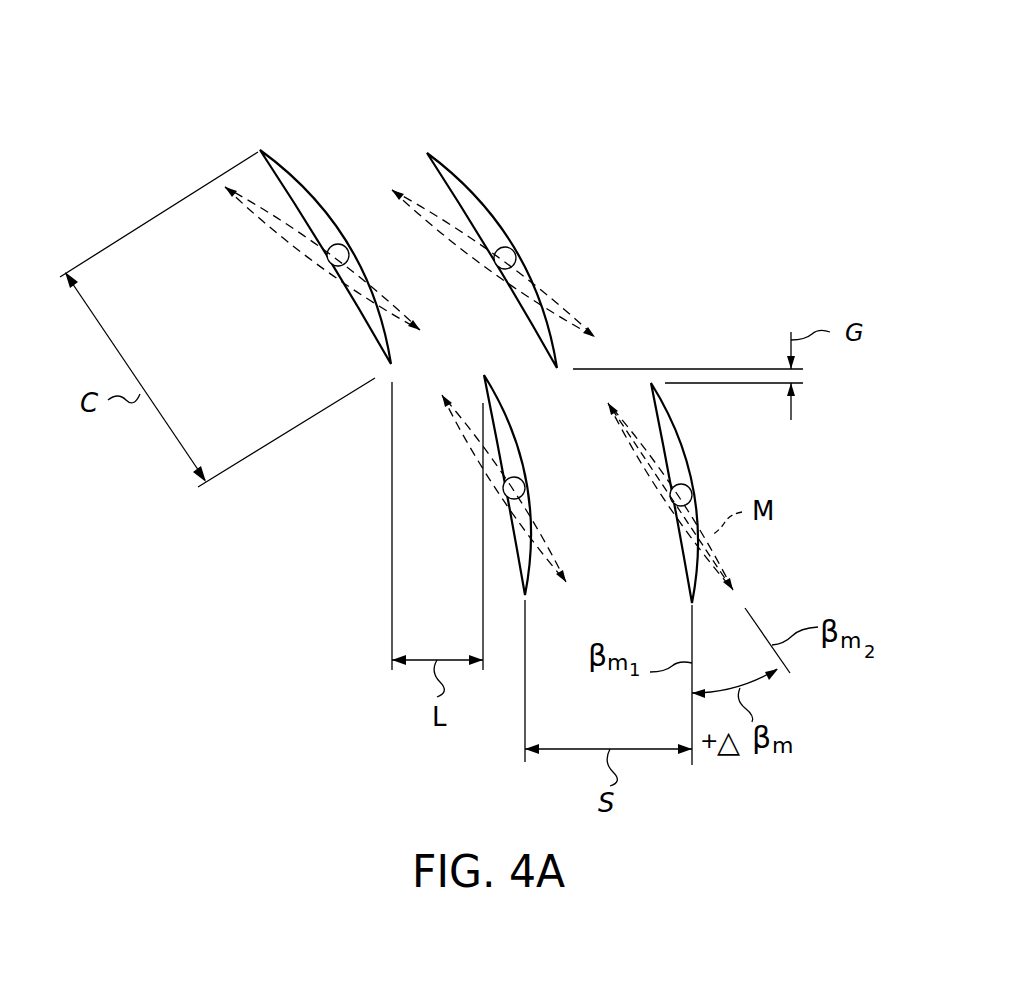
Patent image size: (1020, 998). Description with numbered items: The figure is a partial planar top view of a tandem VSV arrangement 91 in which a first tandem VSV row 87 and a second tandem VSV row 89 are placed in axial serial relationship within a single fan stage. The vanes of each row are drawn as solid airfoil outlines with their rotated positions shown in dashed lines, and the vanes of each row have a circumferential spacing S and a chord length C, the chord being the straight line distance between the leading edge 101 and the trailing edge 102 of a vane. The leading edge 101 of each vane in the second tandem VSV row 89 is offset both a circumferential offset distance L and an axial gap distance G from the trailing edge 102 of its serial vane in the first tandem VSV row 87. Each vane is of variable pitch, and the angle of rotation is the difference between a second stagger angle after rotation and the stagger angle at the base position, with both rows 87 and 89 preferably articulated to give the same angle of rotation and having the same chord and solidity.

The tandem VSV arrangement 91 is at (523, 87).
The first tandem VSV row 87 is at (600, 208).
The second tandem VSV row 89 is at (760, 459).
The leading edge 101 is at (484, 375).
The trailing edge 102 is at (389, 364).